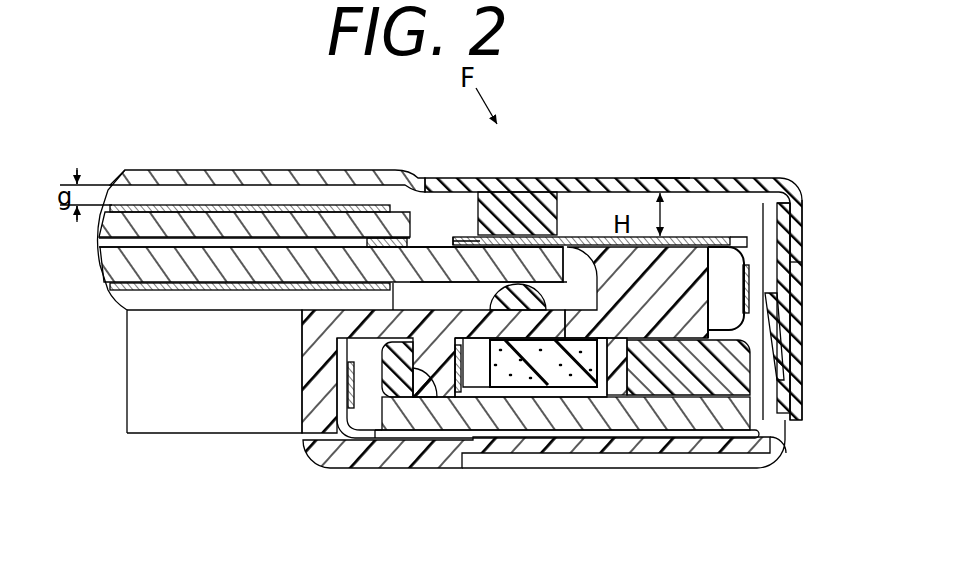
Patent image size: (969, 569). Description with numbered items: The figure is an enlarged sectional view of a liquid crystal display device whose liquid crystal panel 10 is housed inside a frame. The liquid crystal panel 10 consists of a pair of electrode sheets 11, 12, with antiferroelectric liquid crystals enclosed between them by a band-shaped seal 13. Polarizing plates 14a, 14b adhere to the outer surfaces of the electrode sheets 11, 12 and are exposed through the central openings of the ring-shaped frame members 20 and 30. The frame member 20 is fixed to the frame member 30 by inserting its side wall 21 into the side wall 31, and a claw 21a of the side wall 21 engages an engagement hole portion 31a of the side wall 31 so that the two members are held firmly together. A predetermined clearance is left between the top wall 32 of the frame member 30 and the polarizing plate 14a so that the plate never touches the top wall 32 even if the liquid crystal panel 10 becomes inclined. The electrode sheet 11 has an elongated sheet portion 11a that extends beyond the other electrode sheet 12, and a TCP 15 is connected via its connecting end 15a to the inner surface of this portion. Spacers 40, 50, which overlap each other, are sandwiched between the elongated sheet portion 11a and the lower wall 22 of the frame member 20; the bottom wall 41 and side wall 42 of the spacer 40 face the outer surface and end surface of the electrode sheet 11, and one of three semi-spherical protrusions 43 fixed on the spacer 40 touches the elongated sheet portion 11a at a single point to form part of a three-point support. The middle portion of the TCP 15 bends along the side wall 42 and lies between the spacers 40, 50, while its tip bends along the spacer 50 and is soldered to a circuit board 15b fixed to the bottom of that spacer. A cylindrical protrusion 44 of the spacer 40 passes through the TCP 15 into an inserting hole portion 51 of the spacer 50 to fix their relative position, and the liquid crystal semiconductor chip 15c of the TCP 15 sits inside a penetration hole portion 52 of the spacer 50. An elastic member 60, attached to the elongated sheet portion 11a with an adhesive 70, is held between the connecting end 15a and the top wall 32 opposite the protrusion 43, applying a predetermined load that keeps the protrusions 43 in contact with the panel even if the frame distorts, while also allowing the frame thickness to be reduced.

The liquid crystal panel 10 is at (148, 302).
The electrode sheet 11 is at (120, 266).
The elongated sheet portion 11a is at (428, 255).
The electrode sheet 12 is at (118, 230).
The band-shaped seal 13 is at (372, 240).
The polarizing plate 14a is at (217, 186).
The polarizing plate 14b is at (207, 288).
The TCP (tape carrier package) 15 is at (736, 232).
The connecting end 15a is at (463, 236).
The circuit board 15b is at (692, 422).
The liquid crystal semiconductor chip 15c is at (545, 386).
The frame member 20 is at (755, 467).
The side wall 21 is at (780, 205).
The claw 21a is at (790, 340).
The lower wall 22 is at (645, 420).
The frame member 30 is at (765, 178).
The side wall 31 is at (792, 226).
The engagement hole portion 31a is at (792, 263).
The top wall 32 is at (548, 237).
The spacer 40 is at (662, 250).
The bottom wall 41 is at (487, 336).
The side wall 42 is at (710, 300).
The protrusion 43 is at (662, 177).
The cylindrical protrusion 44 is at (430, 392).
The spacer 50 is at (742, 376).
The inserting hole portion 51 is at (395, 440).
The penetration hole portion 52 is at (600, 390).
The elastic member 60 is at (521, 192).
The adhesive 70 is at (530, 292).